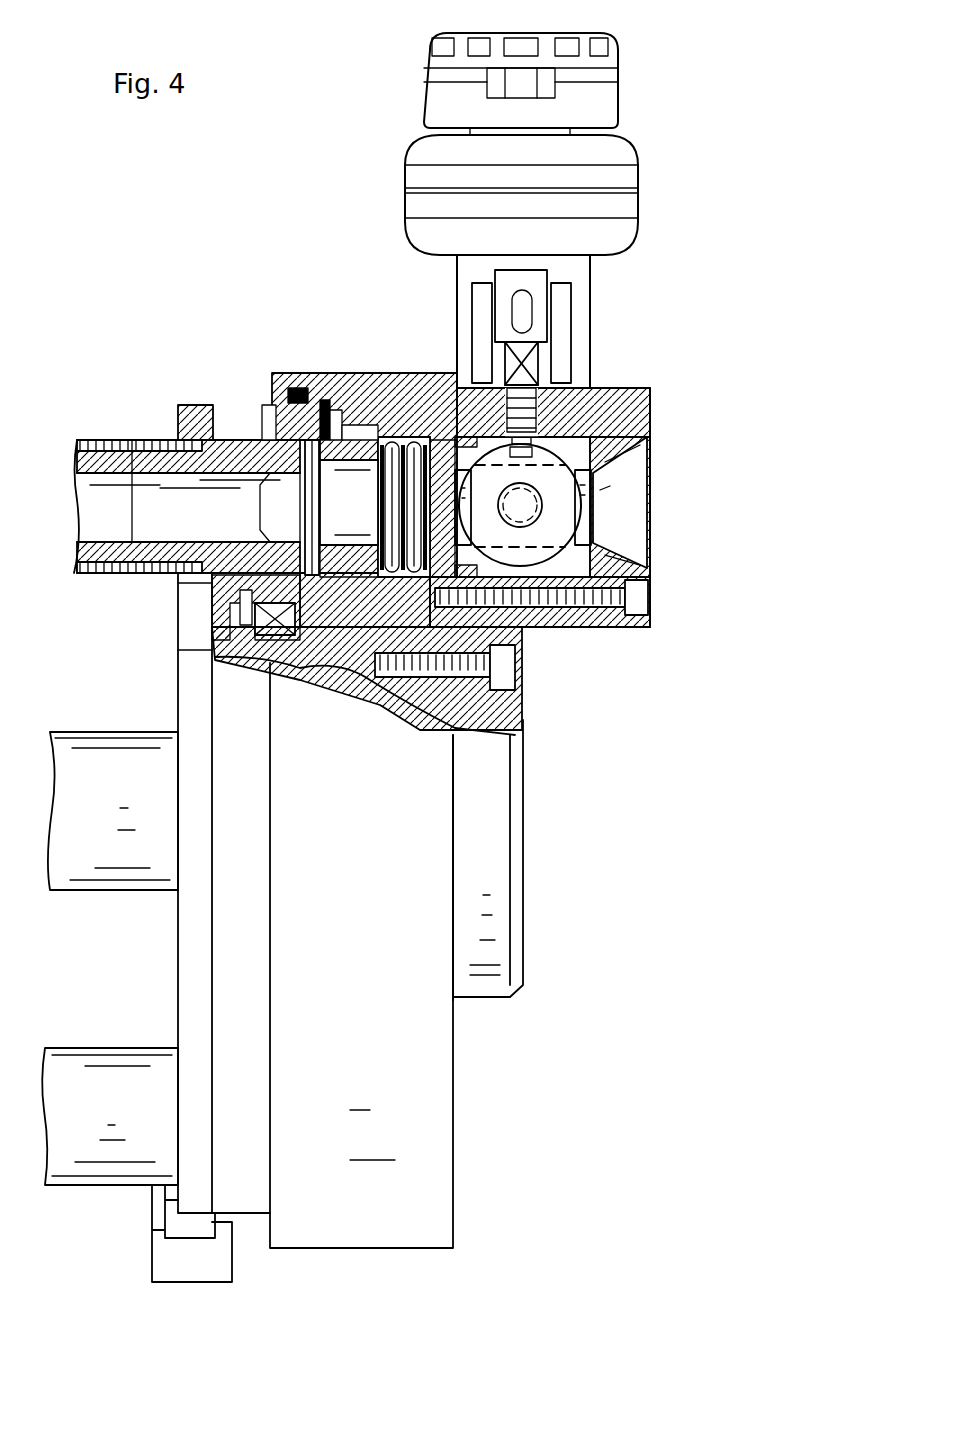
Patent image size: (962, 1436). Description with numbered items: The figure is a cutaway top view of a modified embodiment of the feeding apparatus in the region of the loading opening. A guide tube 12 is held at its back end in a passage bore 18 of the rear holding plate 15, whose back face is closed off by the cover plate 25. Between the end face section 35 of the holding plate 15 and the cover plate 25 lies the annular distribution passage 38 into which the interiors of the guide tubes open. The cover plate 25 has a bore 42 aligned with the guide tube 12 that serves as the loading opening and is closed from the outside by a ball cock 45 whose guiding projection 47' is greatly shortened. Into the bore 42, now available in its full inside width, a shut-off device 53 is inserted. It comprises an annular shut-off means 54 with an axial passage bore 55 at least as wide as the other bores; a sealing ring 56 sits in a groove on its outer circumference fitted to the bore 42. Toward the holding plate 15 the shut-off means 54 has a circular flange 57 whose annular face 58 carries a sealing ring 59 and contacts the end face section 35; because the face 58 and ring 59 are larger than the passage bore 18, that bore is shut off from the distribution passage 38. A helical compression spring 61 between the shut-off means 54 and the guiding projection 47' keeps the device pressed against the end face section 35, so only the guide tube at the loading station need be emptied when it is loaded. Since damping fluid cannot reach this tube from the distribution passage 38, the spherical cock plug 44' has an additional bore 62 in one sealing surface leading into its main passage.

The guide tube 12 is at (100, 435).
The rear holding plate 15 is at (206, 402).
The passage bore 18 is at (308, 555).
The cover plate 25 is at (272, 368).
The end face section 35 is at (325, 512).
The distribution passage 38 is at (330, 620).
The bore 42 is at (422, 405).
The spherical cock plug 44' is at (594, 474).
The ball cock 45 is at (598, 630).
The guiding projection 47' is at (541, 637).
The shut-off device 53 is at (342, 400).
The annular shut-off means 54 is at (385, 410).
The axial passage bore 55 is at (264, 410).
The sealing ring 56 is at (353, 405).
The circular flange 57 is at (332, 396).
The annular face 58 is at (248, 612).
The sealing ring 59 is at (178, 592).
The helical compression spring 61 is at (400, 512).
The additional bore 62 is at (545, 498).